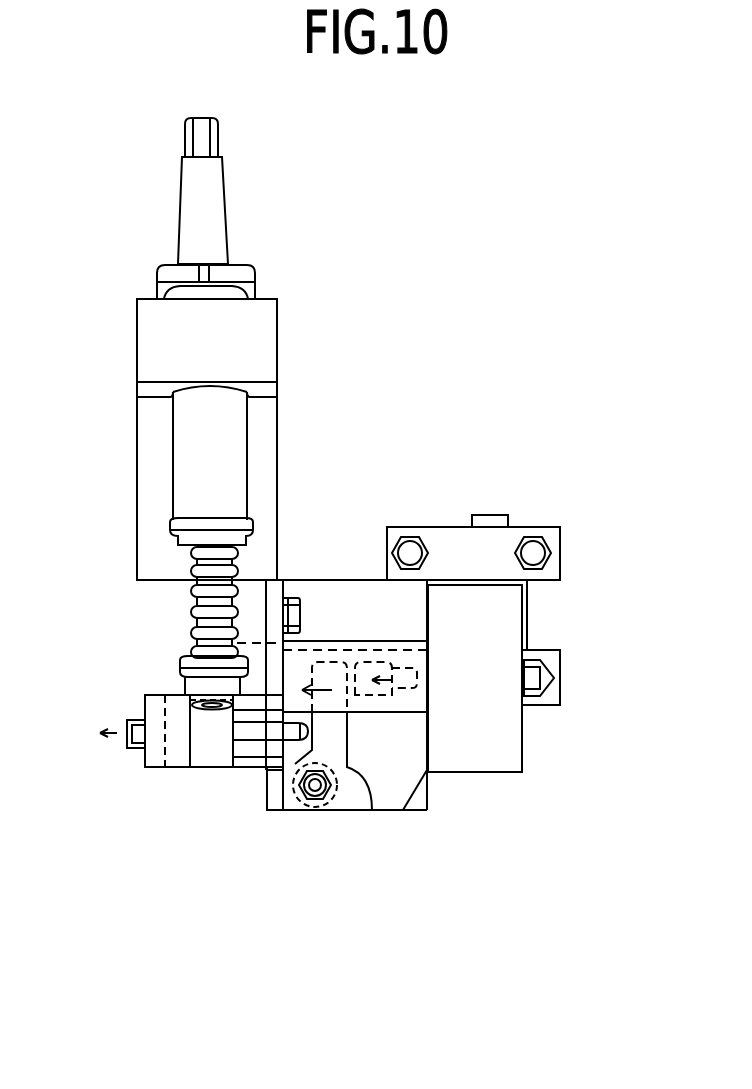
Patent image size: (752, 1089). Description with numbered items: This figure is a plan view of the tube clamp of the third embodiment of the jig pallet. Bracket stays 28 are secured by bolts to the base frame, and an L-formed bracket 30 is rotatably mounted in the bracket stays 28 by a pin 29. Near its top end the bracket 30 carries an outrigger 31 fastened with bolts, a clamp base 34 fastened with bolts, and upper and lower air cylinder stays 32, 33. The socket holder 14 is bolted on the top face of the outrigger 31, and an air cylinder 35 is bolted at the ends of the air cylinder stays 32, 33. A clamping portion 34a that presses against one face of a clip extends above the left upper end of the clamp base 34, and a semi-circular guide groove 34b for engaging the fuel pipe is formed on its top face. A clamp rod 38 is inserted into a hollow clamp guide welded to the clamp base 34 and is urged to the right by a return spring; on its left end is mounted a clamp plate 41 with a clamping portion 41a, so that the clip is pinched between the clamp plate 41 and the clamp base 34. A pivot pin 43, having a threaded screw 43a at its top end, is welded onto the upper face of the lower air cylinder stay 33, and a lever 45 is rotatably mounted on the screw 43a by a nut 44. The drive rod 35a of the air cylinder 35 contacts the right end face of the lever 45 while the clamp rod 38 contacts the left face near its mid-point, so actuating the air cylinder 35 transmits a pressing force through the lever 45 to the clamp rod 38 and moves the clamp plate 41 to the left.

The socket holder 14 is at (267, 243).
The bracket stays 28 is at (562, 532).
The pin 29 is at (490, 515).
The L-formed bracket 30 is at (343, 603).
The outrigger 31 is at (141, 527).
The upper air cylinder stay 32 is at (397, 737).
The lower air cylinder stay 33 is at (383, 805).
The clamp base 34 is at (274, 596).
The clamping portion 34a is at (233, 717).
The semi-circular guide groove 34b is at (252, 752).
The air cylinder 35 is at (500, 758).
The drive rod 35a is at (373, 697).
The clamp rod 38 is at (258, 807).
The clamp plate 41 is at (147, 693).
The clamping portion 41a is at (197, 737).
The pivot pin 43 is at (343, 807).
The threaded screw 43a is at (314, 807).
The nut 44 is at (368, 810).
The lever 45 is at (342, 672).